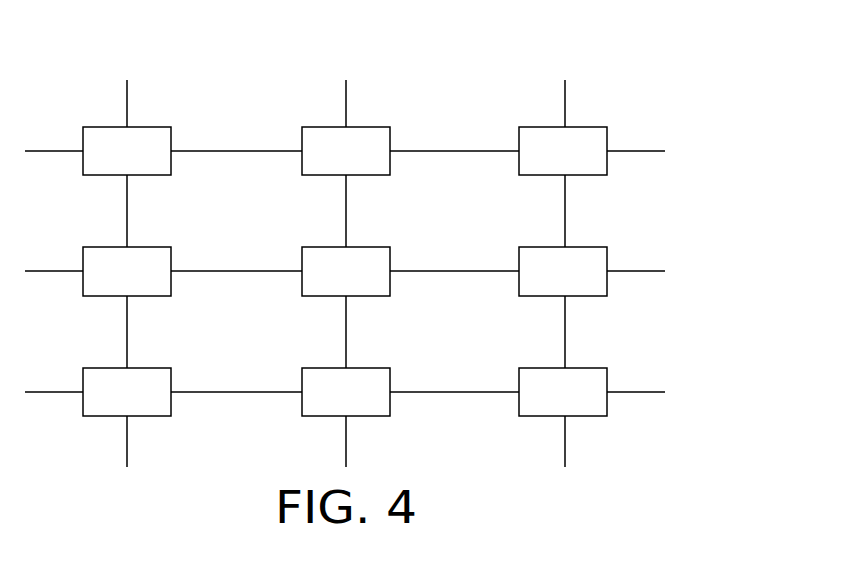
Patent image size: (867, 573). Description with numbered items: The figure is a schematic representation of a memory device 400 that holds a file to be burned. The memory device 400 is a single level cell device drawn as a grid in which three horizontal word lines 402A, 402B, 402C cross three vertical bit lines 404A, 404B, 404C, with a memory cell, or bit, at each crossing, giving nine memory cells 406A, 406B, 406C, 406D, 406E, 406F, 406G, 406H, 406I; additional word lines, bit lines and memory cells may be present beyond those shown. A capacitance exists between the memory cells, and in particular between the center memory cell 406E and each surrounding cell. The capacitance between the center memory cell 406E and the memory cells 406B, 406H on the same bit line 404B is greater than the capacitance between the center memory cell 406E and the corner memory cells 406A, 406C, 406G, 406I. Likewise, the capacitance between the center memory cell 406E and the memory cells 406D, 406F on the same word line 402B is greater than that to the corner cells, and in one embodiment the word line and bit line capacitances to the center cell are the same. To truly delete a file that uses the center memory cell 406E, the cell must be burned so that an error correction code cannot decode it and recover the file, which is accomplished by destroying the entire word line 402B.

The memory device 400 is at (220, 28).
The word line 402A is at (380, 152).
The word line 402B is at (379, 272).
The word line 402C is at (380, 393).
The bit line 404A is at (132, 259).
The bit line 404B is at (347, 259).
The bit line 404C is at (565, 259).
The memory cell 406A is at (127, 151).
The memory cell 406B is at (346, 151).
The memory cell 406C is at (563, 151).
The memory cell 406D is at (127, 271).
The center memory cell 406E is at (346, 271).
The memory cell 406F is at (563, 271).
The memory cell 406G is at (127, 392).
The memory cell 406H is at (346, 392).
The memory cell 406I is at (563, 392).